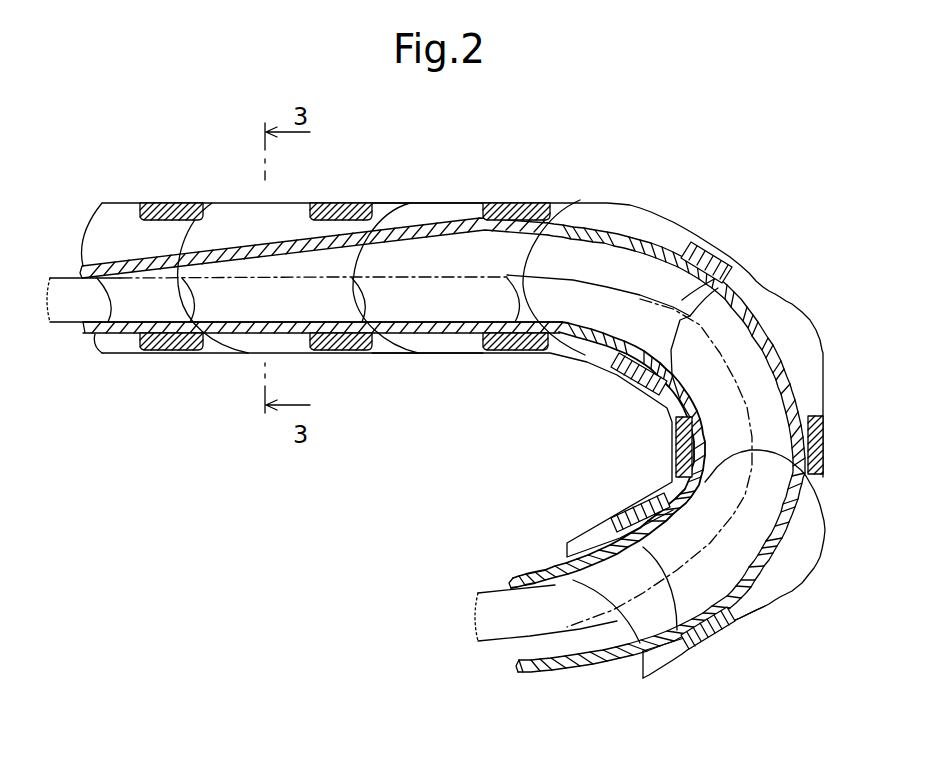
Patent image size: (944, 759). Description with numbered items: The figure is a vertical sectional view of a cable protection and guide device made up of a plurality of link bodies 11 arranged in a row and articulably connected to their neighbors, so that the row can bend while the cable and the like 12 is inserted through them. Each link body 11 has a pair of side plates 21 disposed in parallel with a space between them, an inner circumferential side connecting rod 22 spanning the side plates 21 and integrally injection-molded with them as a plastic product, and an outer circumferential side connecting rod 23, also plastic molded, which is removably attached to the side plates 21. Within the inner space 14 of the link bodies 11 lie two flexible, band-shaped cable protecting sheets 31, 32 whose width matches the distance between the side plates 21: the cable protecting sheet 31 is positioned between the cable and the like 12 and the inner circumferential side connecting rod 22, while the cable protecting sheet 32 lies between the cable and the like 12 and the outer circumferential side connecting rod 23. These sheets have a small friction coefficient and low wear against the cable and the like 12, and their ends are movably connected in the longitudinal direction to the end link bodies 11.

The link body 11 is at (575, 200).
The cable and the like 12 is at (488, 590).
The inner space 14 is at (628, 263).
The side plate 21 is at (428, 350).
The inner circumferential side connecting rod 22 is at (517, 345).
The outer circumferential side connecting rod 23 is at (510, 202).
The cable protecting sheet 31 is at (465, 333).
The cable protecting sheet 32 is at (425, 227).